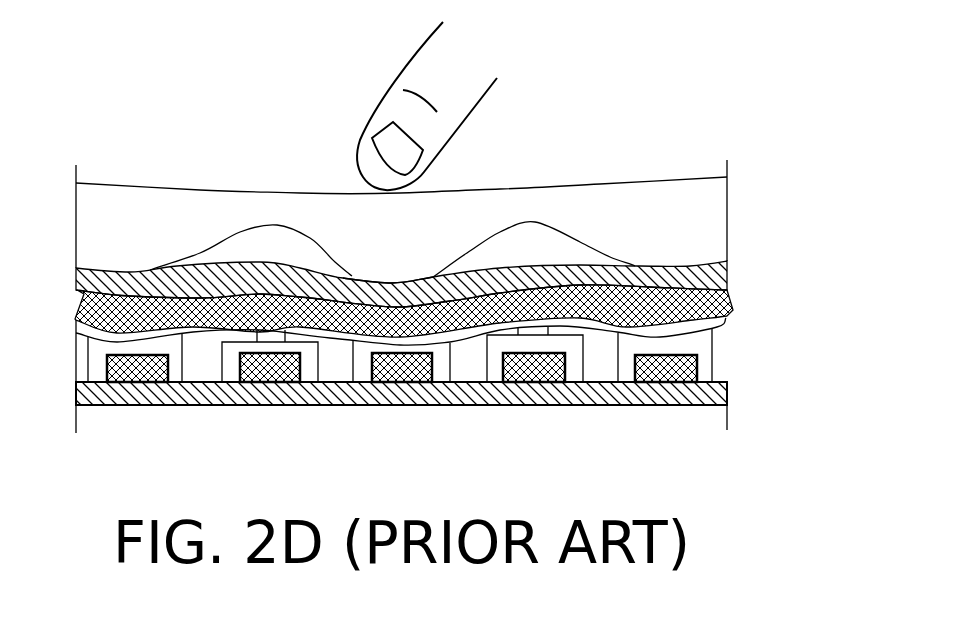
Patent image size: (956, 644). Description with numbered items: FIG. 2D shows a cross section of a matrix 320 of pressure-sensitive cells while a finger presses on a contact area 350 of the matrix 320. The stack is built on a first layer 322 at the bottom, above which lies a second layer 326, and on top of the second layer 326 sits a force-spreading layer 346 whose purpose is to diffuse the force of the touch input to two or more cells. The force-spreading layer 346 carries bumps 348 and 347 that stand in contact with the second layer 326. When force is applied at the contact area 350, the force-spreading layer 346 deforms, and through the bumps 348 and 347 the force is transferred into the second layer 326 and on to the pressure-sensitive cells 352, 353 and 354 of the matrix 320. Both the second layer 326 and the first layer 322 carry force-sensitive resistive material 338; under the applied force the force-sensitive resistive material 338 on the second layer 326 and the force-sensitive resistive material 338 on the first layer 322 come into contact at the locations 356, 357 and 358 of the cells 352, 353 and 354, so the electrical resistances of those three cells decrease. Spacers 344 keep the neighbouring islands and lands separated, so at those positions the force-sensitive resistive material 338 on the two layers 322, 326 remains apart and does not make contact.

The matrix 320 is at (642, 107).
The first layer 322 is at (742, 398).
The second layer 326 is at (743, 272).
The force-sensitive resistive material 338 is at (150, 347).
The spacers 344 is at (276, 350).
The force-spreading layer 346 is at (388, 225).
The bumps 347 is at (128, 264).
The bumps 348 is at (392, 275).
The contact area 350 is at (420, 182).
The pressure-sensitive cell 352 is at (128, 420).
The pressure-sensitive cell 353 is at (398, 420).
The pressure-sensitive cell 354 is at (667, 422).
The location 356 is at (167, 382).
The location 357 is at (407, 352).
The location 358 is at (655, 346).